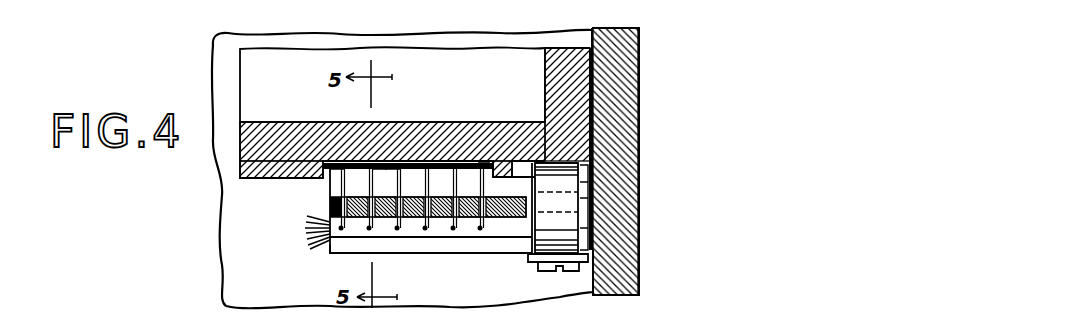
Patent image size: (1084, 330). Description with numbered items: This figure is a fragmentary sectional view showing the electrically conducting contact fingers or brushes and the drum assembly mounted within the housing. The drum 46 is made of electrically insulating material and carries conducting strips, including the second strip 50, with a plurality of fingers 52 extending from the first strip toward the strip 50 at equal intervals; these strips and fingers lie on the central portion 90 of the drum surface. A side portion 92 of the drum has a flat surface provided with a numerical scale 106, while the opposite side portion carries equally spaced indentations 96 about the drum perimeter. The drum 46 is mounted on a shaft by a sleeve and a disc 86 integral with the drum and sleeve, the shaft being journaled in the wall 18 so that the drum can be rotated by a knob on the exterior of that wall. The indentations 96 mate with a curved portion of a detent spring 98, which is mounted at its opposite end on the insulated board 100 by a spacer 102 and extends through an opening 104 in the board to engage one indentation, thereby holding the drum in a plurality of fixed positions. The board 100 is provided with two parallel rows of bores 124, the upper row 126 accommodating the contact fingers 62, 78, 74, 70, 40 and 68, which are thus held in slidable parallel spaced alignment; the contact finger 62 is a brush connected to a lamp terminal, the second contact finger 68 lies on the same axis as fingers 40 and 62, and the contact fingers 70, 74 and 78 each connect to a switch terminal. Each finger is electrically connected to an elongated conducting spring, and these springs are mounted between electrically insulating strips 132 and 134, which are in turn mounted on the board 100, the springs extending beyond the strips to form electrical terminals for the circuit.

The wall 18 is at (623, 115).
The contact finger 40 is at (470, 162).
The drum 46 is at (316, 110).
The second strip 50 is at (347, 163).
The fingers 52 is at (386, 163).
The contact finger 62 is at (332, 186).
The second contact finger 68 is at (492, 162).
The contact finger 70 is at (441, 162).
The contact finger 74 is at (421, 162).
The contact finger 78 is at (392, 163).
The disc 86 is at (576, 97).
The central portion 90 is at (478, 162).
The side portion 92 is at (230, 182).
The indentations 96 is at (594, 170).
The detent spring 98 is at (596, 205).
The insulated board 100 is at (510, 214).
The spacer 102 is at (345, 250).
The opening 104 is at (598, 222).
The numerical scale 106 is at (258, 187).
The bores 124 is at (418, 216).
The upper row of bores 126 is at (308, 215).
The insulating strip 132 is at (521, 246).
The insulating strip 134 is at (360, 228).